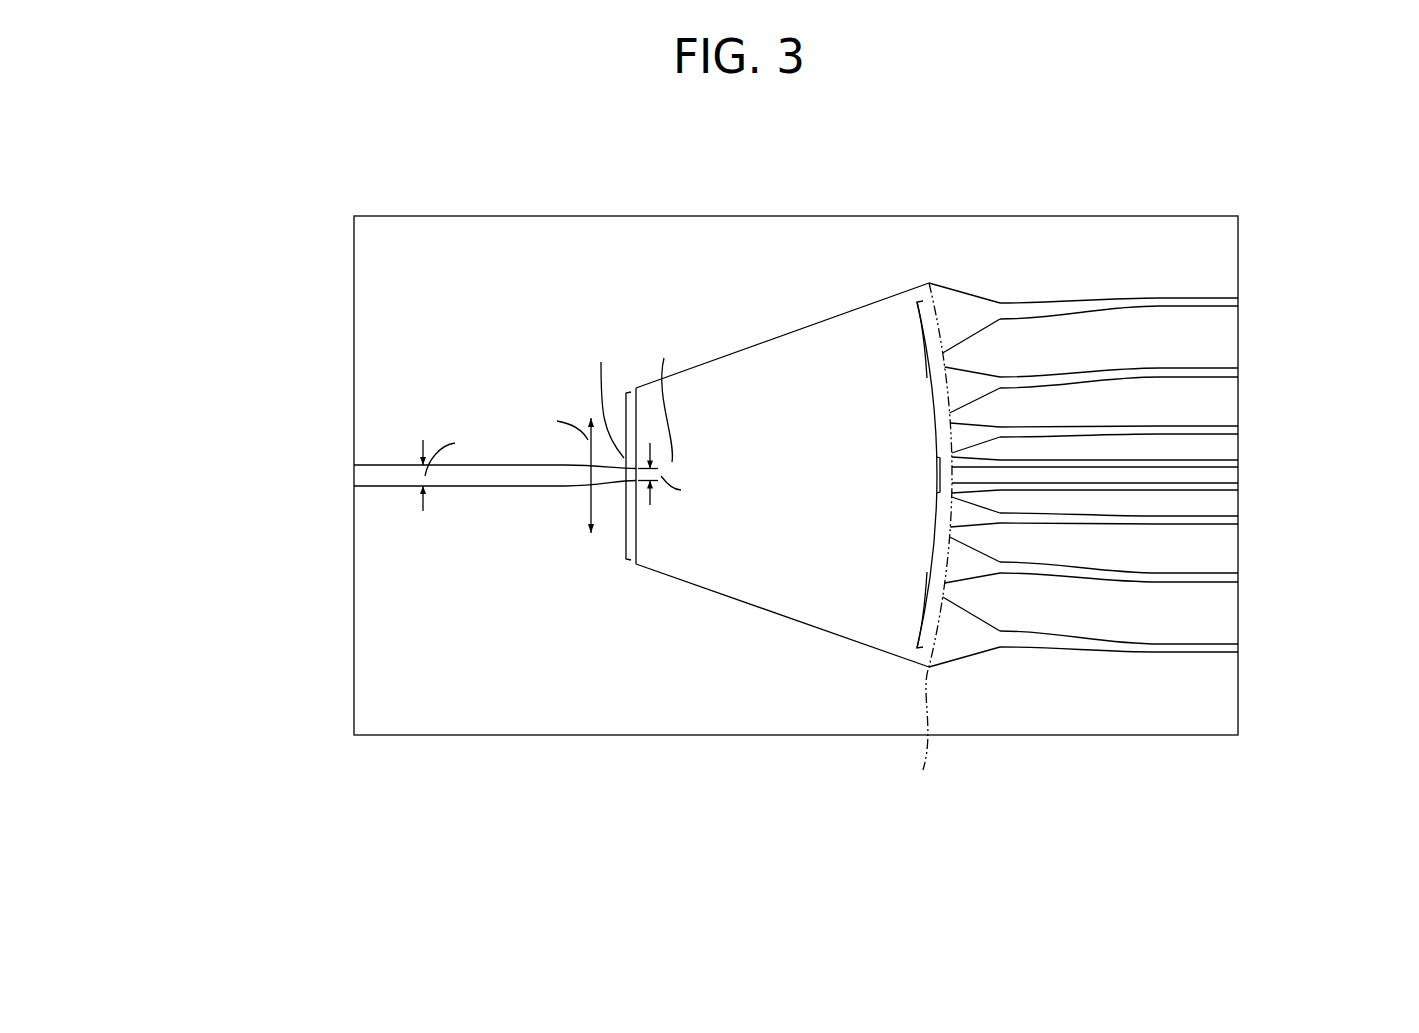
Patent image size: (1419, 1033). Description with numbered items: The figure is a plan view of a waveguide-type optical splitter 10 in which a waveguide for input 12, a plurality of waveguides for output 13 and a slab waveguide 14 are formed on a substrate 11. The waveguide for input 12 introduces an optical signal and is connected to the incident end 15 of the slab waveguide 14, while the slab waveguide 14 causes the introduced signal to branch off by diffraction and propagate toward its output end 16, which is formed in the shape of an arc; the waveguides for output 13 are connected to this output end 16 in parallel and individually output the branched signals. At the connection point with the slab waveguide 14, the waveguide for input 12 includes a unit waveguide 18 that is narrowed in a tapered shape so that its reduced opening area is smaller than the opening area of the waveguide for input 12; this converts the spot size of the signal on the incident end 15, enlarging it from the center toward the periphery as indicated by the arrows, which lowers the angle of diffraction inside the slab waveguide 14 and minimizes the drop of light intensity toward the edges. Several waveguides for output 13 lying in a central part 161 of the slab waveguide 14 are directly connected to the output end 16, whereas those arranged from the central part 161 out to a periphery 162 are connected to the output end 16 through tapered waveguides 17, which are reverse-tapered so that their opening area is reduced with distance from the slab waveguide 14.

The waveguide-type optical splitter 10 is at (662, 208).
The substrate 11 is at (383, 695).
The waveguide for input 12 is at (385, 465).
The waveguide for output 13 is at (1191, 643).
The slab waveguide 14 is at (728, 578).
The incident end 15 is at (637, 547).
The output end 16 is at (924, 557).
The tapered waveguide 17 is at (968, 655).
The unit waveguide 18 is at (603, 487).
The central part 161 is at (937, 473).
The periphery 162 is at (833, 752).